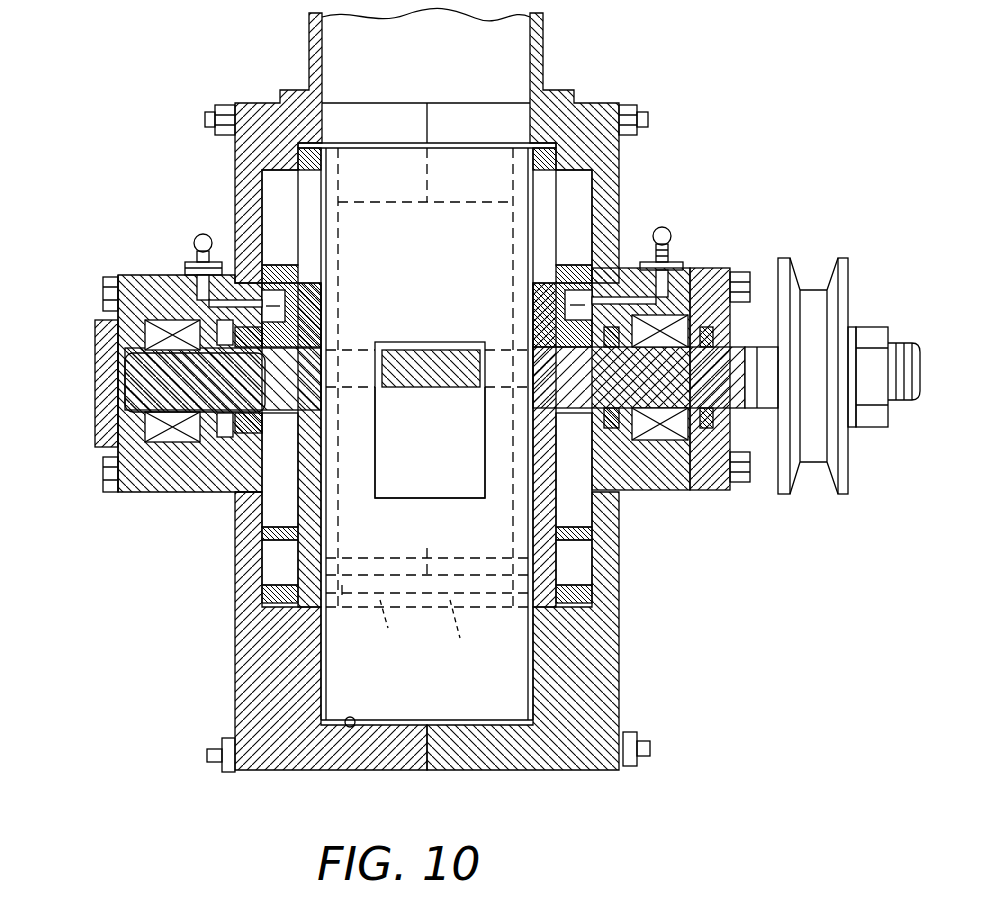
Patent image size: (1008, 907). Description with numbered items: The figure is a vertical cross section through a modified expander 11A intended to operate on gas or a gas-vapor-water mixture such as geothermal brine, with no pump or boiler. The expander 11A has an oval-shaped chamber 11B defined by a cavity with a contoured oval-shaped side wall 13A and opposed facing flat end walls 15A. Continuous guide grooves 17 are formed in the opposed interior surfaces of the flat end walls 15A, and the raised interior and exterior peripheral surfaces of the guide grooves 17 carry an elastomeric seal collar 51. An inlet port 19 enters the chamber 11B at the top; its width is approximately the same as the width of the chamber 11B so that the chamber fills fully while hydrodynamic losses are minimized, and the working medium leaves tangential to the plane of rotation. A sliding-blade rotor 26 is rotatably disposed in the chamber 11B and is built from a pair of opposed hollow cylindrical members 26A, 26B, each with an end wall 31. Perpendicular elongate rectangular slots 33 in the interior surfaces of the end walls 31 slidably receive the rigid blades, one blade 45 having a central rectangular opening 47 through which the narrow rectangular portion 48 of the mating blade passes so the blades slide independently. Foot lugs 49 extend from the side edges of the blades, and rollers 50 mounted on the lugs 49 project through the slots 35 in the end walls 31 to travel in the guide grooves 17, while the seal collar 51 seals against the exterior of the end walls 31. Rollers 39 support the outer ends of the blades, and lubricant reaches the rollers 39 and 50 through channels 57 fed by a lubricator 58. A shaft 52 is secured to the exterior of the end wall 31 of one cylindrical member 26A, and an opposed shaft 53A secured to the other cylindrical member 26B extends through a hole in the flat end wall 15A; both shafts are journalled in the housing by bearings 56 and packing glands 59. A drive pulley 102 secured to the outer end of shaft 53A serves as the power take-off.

The expander modification 11A is at (704, 140).
The oval-shaped chamber 11B is at (235, 700).
The contoured oval-shaped side wall 13A is at (355, 727).
The flat end wall 15A is at (235, 168).
The guide groove 17 is at (265, 568).
The inlet port 19 is at (356, 127).
The expander rotor 26 is at (245, 500).
The hollow cylindrical member 26A is at (405, 626).
The hollow cylindrical member 26B is at (481, 629).
The end wall 31 is at (328, 508).
The elongate rectangular slot 33 is at (345, 336).
The rectangular slot 35 is at (321, 212).
The roller 39 is at (408, 572).
The rigid blade 45 is at (422, 382).
The central rectangular opening 47 is at (392, 454).
The central narrow rectangular portion 48 is at (430, 420).
The foot lug 49 is at (320, 303).
The roller 50 is at (245, 283).
The elastomeric seal collar 51 is at (283, 265).
The shaft 52 is at (125, 385).
The shaft 53A is at (745, 345).
The bearing 56 is at (175, 440).
The channel 57 is at (188, 272).
The lubricator 58 is at (196, 238).
The packing gland 59 is at (262, 347).
The drive pulley 102 is at (838, 290).